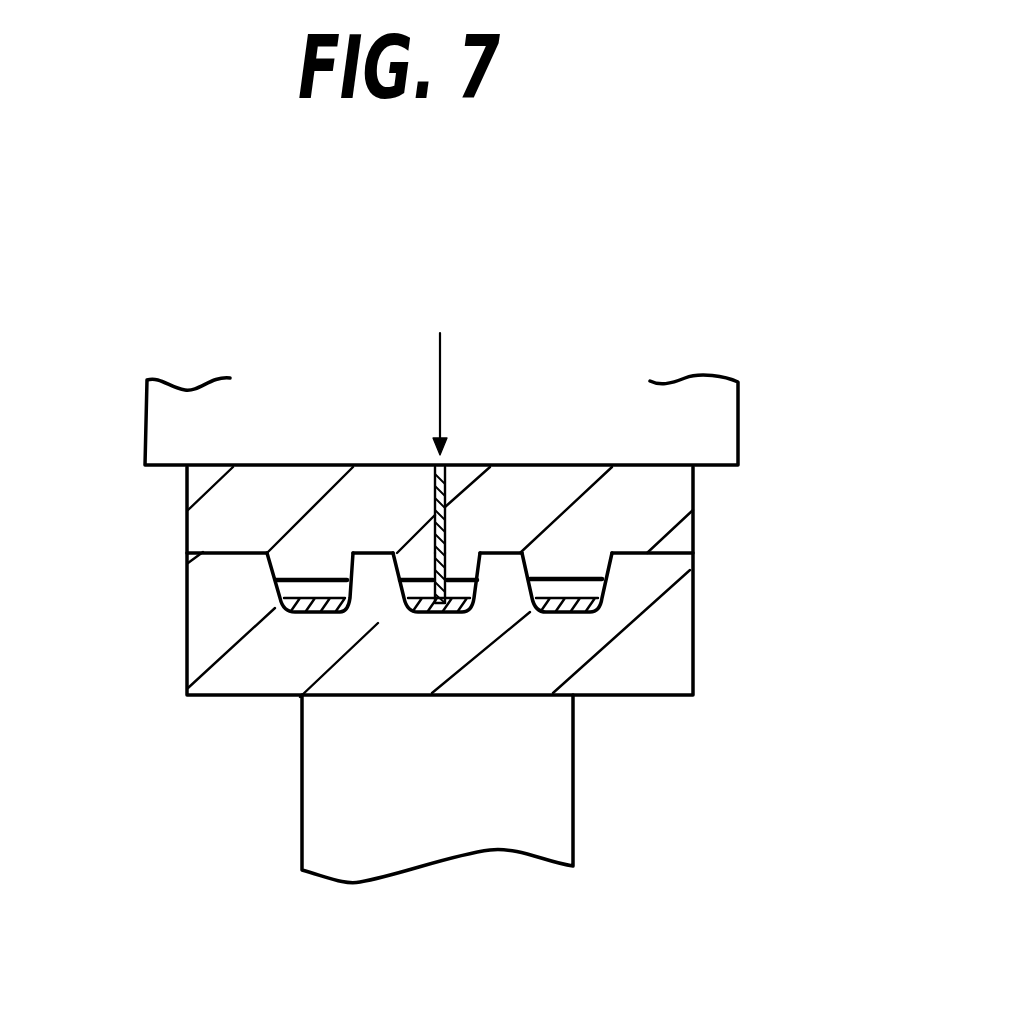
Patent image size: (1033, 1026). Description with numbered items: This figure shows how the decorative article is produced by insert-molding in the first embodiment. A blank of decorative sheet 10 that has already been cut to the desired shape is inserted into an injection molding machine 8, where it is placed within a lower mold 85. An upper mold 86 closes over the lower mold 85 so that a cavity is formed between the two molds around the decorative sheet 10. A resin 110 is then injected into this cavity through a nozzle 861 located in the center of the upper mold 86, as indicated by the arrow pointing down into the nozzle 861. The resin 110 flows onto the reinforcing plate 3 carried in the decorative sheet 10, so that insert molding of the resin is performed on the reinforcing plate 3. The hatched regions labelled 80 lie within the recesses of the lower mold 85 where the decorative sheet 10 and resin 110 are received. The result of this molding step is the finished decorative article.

The injection molding machine 8 is at (763, 403).
The upper mold 86 is at (640, 512).
The lower mold 85 is at (680, 628).
The nozzle 861 is at (430, 527).
The resin 110 is at (448, 580).
The contact 80 is at (335, 585).
The decorative sheet 10 is at (318, 607).
The reinforcing plate 3 is at (273, 587).